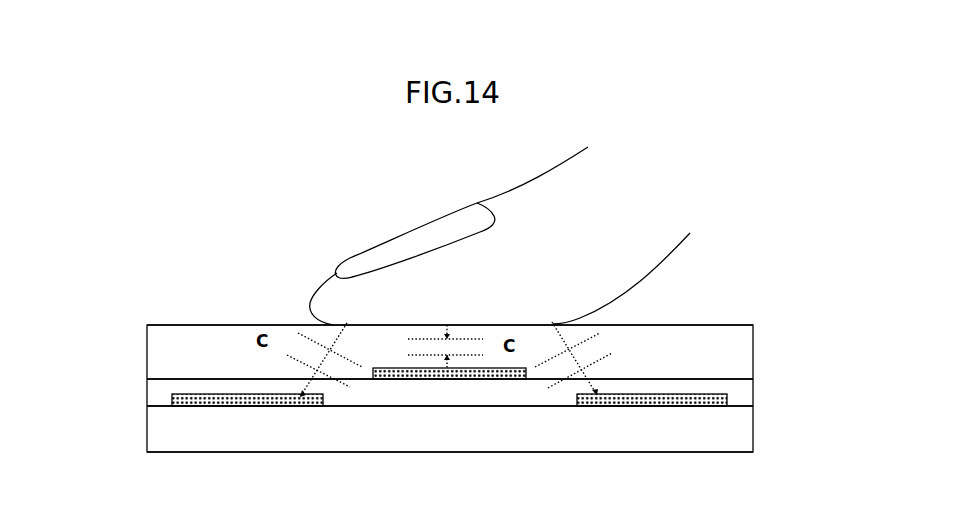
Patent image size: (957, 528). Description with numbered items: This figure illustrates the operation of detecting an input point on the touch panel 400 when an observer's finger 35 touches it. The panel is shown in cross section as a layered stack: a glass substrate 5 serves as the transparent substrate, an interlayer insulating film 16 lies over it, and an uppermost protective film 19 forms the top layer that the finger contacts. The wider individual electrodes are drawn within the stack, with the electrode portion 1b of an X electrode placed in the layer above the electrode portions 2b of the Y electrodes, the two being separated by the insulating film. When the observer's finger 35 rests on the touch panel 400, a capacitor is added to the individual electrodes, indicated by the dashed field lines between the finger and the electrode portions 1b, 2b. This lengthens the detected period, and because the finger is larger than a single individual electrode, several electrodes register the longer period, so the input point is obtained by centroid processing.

The touch panel 400 is at (765, 325).
The uppermost protective film 19 is at (157, 347).
The interlayer insulating film 16 is at (157, 382).
The glass substrate 5 is at (157, 428).
The electrode portion 2b is at (247, 406).
The electrode portion 1b is at (470, 370).
The observer's finger 35 is at (360, 267).